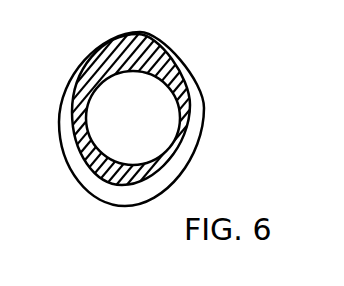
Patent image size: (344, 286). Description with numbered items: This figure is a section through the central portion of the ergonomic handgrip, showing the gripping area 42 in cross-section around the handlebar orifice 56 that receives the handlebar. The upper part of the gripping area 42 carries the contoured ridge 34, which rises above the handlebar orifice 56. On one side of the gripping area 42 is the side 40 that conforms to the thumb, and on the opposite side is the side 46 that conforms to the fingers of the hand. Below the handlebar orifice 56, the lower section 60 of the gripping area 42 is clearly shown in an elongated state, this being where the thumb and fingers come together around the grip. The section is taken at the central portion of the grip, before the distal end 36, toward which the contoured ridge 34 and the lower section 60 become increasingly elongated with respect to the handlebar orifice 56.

The contoured ridge 34 is at (137, 33).
The distal end 36 is at (64, 153).
The side conforming to the thumb 40 is at (187, 124).
The gripping area 42 is at (186, 76).
The side conforming to the fingers 46 is at (66, 89).
The handlebar orifice 56 is at (93, 94).
The lower section 60 is at (127, 193).